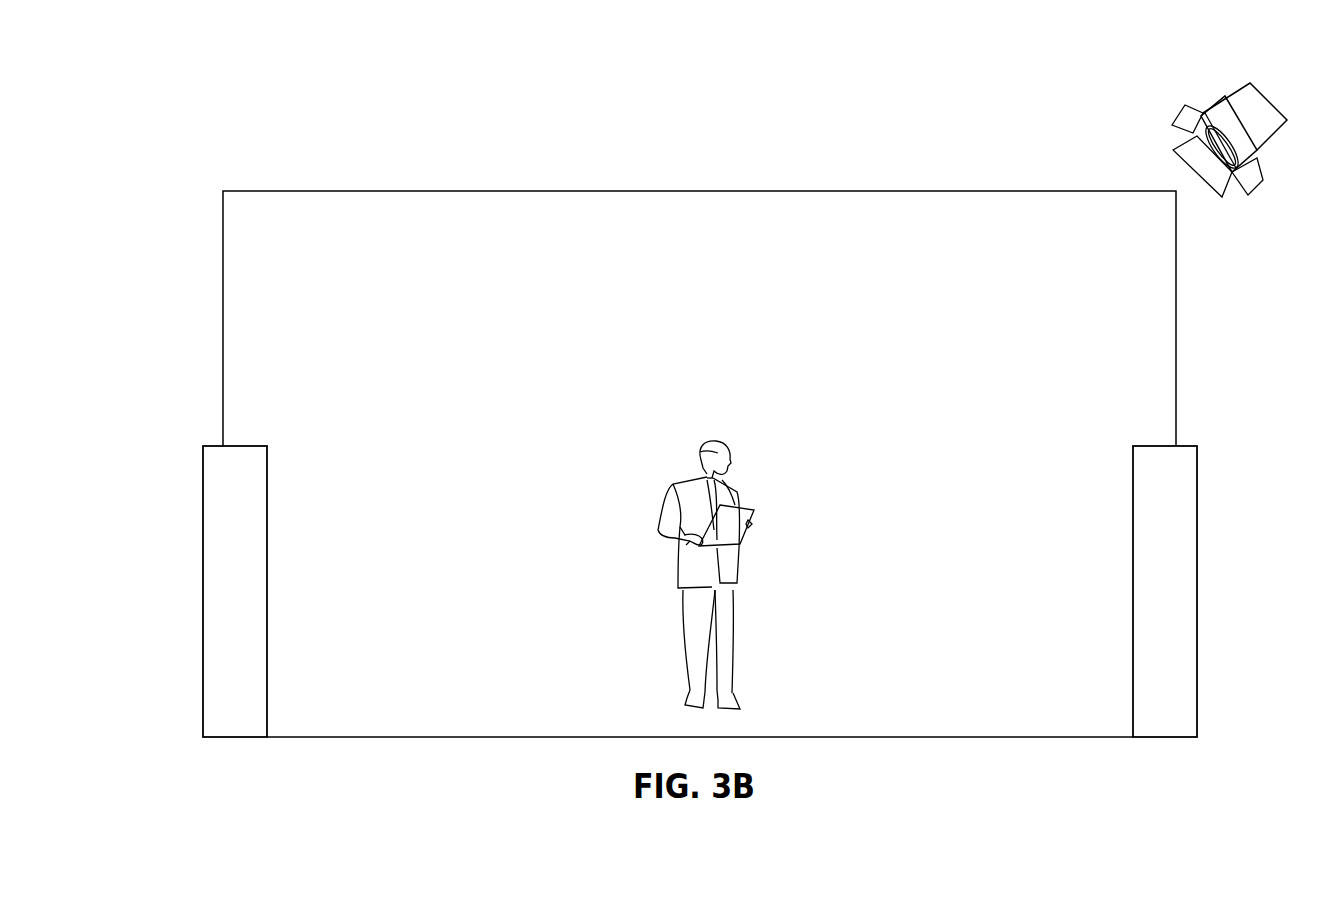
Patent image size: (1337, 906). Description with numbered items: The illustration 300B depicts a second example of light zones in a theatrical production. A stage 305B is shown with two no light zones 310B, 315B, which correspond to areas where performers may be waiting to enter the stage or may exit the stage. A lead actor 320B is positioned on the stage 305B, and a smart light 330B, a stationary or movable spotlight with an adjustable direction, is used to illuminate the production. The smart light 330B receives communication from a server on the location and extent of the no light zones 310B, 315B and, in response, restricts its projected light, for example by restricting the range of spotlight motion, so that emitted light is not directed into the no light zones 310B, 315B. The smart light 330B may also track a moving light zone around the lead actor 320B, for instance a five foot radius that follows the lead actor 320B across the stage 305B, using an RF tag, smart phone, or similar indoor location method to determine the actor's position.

The illustration 300B is at (297, 117).
The stage 305B is at (596, 214).
The no light zone 310B is at (222, 510).
The no light zone 315B is at (1182, 485).
The lead actor 320B is at (737, 492).
The smart light 330B is at (1231, 96).